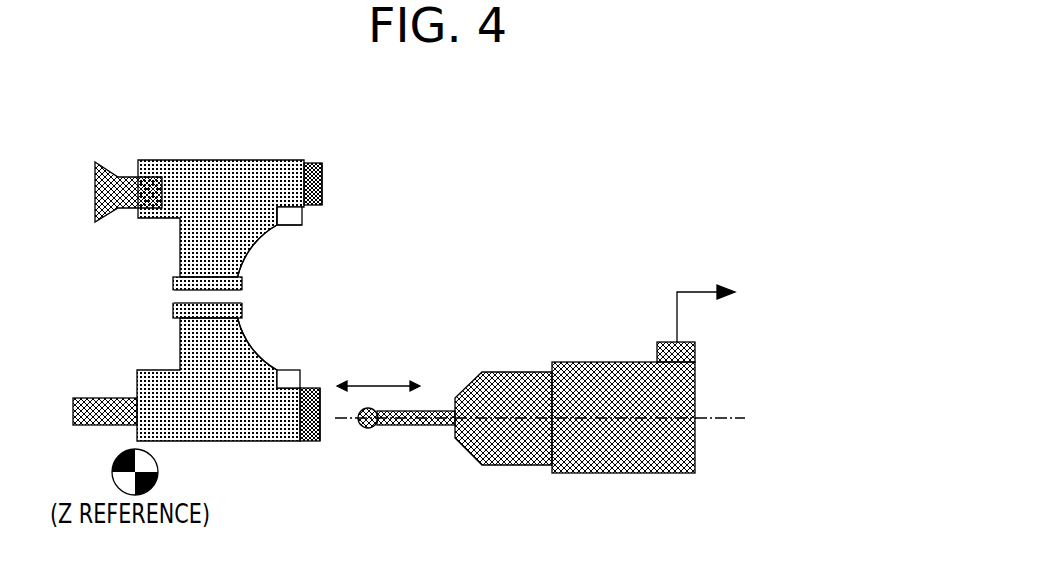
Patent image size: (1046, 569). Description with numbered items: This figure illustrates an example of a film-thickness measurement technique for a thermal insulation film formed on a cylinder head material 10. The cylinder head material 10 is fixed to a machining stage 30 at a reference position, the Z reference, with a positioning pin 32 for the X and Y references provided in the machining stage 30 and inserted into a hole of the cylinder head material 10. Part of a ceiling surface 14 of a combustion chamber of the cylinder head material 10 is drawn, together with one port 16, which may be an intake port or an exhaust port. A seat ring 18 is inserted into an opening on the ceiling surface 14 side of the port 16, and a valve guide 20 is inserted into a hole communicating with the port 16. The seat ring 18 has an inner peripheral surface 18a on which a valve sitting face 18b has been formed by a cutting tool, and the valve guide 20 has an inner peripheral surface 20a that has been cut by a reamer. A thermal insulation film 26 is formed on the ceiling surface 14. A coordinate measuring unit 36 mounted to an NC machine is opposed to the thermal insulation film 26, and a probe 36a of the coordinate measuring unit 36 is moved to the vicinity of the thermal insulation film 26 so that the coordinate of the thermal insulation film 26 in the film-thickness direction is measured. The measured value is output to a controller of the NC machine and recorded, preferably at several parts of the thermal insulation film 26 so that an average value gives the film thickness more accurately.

The cylinder head material 10 is at (211, 147).
The ceiling surface 14 is at (313, 163).
The port 16 is at (259, 325).
The seat ring 18 is at (299, 216).
The inner peripheral surface 18a is at (289, 226).
The valve sitting face 18b is at (296, 222).
The valve guide 20 is at (175, 277).
The inner peripheral surface 20a is at (172, 297).
The thermal insulation film 26 is at (322, 182).
The machining stage 30 is at (97, 398).
The positioning pin 32 is at (118, 176).
The coordinate measuring unit 36 is at (522, 372).
The probe 36a is at (410, 425).